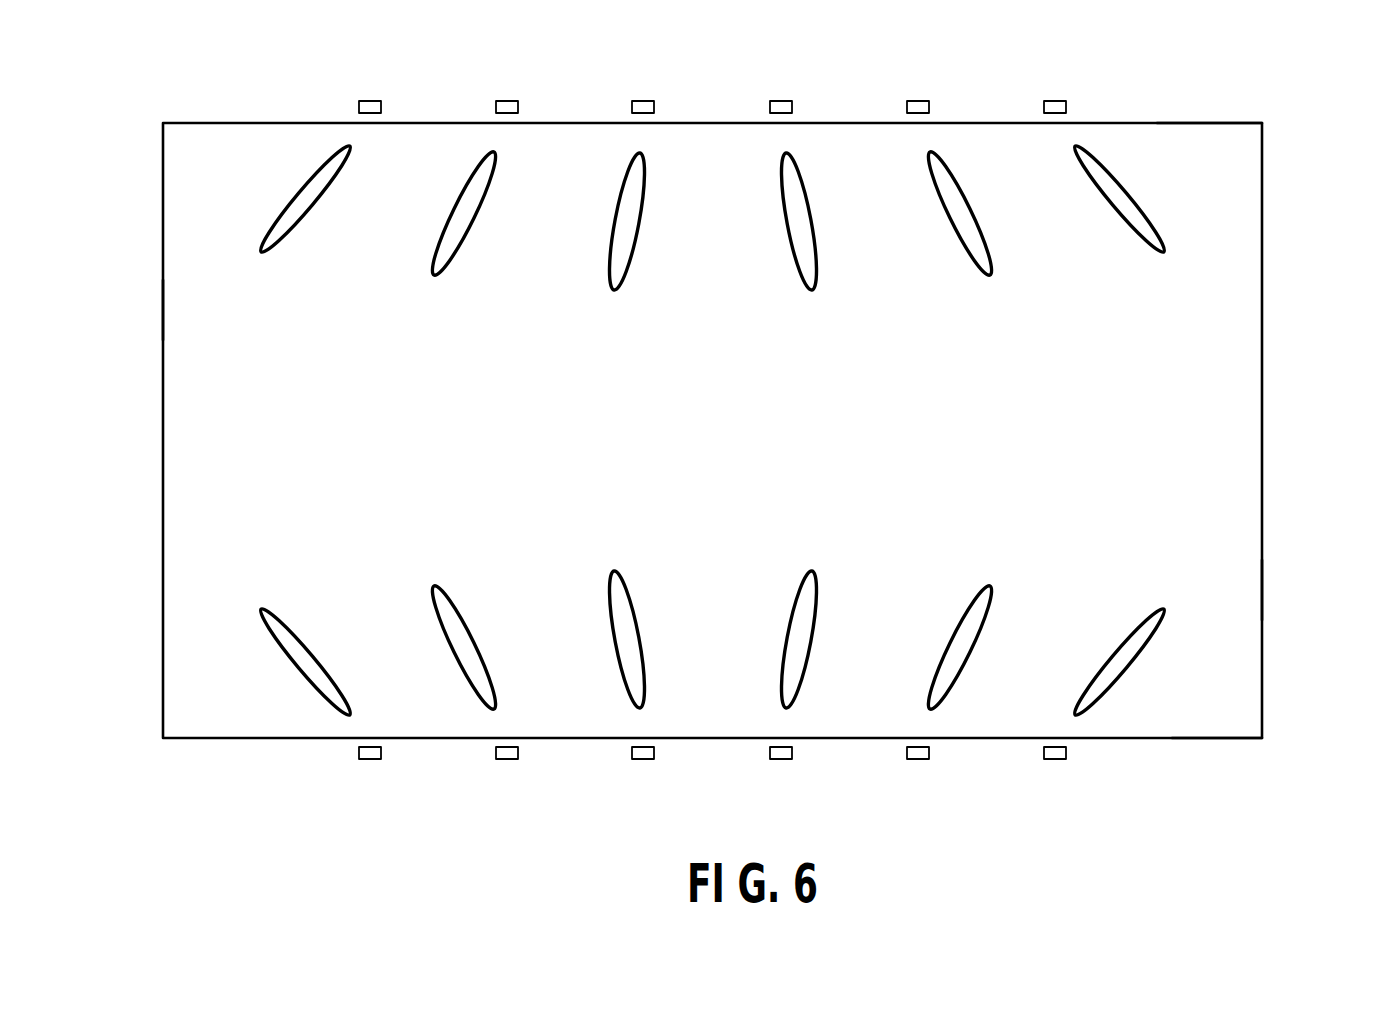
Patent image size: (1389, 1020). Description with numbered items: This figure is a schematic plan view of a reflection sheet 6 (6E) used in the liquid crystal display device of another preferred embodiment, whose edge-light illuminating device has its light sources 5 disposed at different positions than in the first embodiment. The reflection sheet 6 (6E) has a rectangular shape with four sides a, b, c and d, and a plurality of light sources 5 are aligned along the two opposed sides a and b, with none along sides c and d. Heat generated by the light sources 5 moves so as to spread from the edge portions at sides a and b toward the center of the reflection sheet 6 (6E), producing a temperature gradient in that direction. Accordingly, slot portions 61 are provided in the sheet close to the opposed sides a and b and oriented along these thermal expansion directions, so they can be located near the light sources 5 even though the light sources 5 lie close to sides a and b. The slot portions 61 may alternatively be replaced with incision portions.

The light source 5 is at (370, 100).
The reflection sheet 6 is at (772, 430).
The reflection sheet 6E is at (1276, 253).
The slot portion 61 is at (261, 253).
The side a is at (1181, 751).
The side b is at (1169, 116).
The side c is at (1276, 596).
The side d is at (150, 313).